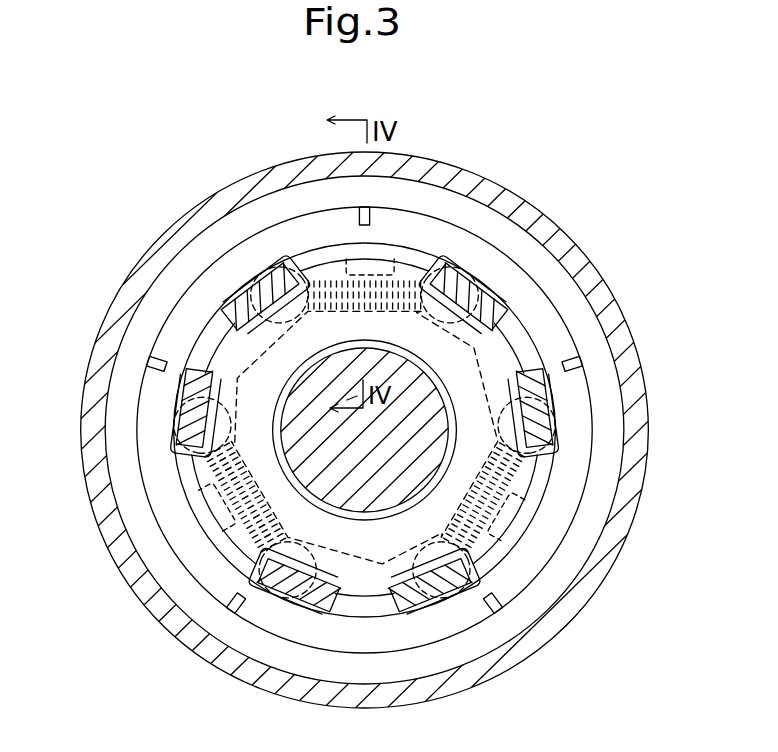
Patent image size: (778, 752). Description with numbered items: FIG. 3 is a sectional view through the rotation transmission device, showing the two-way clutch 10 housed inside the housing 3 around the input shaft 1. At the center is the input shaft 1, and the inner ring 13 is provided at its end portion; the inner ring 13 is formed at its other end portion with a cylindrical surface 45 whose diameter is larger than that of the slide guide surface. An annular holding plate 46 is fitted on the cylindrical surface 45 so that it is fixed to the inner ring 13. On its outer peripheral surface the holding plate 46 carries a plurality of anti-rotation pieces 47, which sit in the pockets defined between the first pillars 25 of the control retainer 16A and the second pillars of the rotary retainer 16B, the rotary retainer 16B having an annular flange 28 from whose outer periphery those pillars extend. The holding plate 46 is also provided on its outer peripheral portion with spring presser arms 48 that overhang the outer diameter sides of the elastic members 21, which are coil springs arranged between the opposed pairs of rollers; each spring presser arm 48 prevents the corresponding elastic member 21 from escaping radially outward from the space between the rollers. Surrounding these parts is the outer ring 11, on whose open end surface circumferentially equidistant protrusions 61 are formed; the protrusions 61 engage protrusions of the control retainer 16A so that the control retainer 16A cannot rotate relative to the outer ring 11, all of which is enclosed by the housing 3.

The input shaft 1 is at (290, 418).
The housing 3 is at (127, 297).
The two-way clutch 10 is at (200, 255).
The outer ring 11 is at (238, 242).
The inner ring 13 is at (257, 363).
The control retainer 16A is at (219, 304).
The rotary retainer 16B is at (497, 284).
The elastic member 21 is at (302, 270).
The first pillars 25 is at (277, 290).
The annular flange 28 is at (510, 315).
The cylindrical surface 45 is at (283, 498).
The annular holding plate 46 is at (217, 490).
The anti-rotation pieces 47 is at (412, 282).
The spring presser arms 48 is at (378, 262).
The protrusions 61 is at (152, 368).